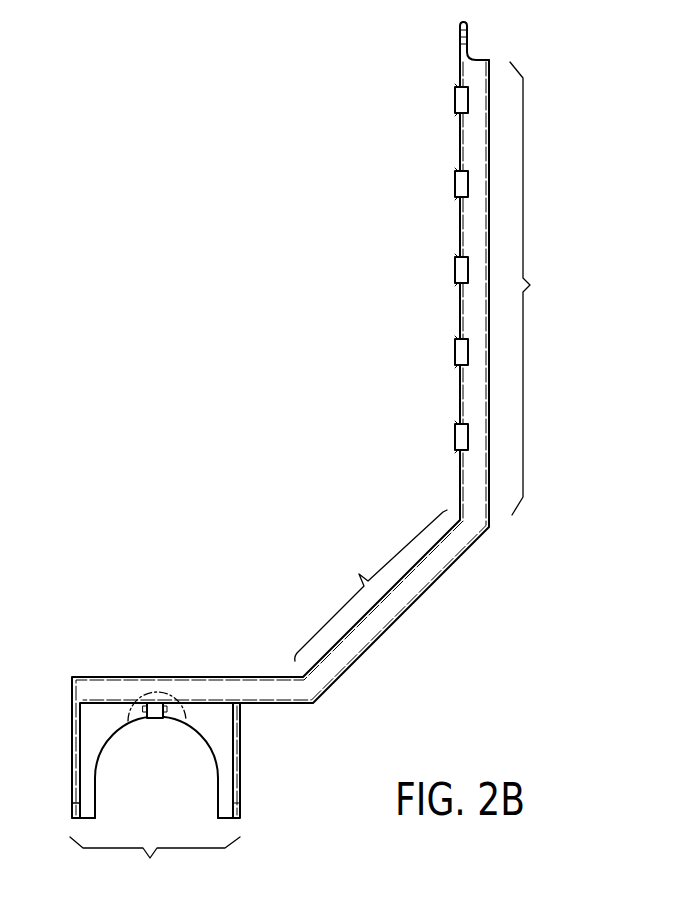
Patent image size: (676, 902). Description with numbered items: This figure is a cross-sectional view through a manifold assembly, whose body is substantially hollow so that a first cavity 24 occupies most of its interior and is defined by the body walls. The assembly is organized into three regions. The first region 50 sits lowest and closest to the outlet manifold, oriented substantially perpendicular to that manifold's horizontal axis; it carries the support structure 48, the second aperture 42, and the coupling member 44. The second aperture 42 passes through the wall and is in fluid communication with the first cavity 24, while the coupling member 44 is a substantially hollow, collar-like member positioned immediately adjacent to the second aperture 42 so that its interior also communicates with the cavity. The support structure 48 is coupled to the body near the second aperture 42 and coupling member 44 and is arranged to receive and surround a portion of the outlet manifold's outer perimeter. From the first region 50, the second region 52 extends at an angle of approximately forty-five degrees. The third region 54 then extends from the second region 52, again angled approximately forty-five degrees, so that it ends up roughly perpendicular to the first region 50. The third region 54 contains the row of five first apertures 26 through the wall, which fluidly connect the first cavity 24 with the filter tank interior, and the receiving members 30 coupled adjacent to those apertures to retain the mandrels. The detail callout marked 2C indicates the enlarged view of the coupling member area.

The first cavity 24 is at (474, 77).
The first apertures 26 is at (410, 268).
The receiving members 30 is at (455, 257).
The third region 54 is at (538, 288).
The second region 52 is at (371, 585).
The second aperture 42 is at (153, 703).
The coupling member 44 is at (160, 720).
The support structure 48 is at (70, 812).
The first region 50 is at (155, 866).
The view indicator 2C is at (143, 702).